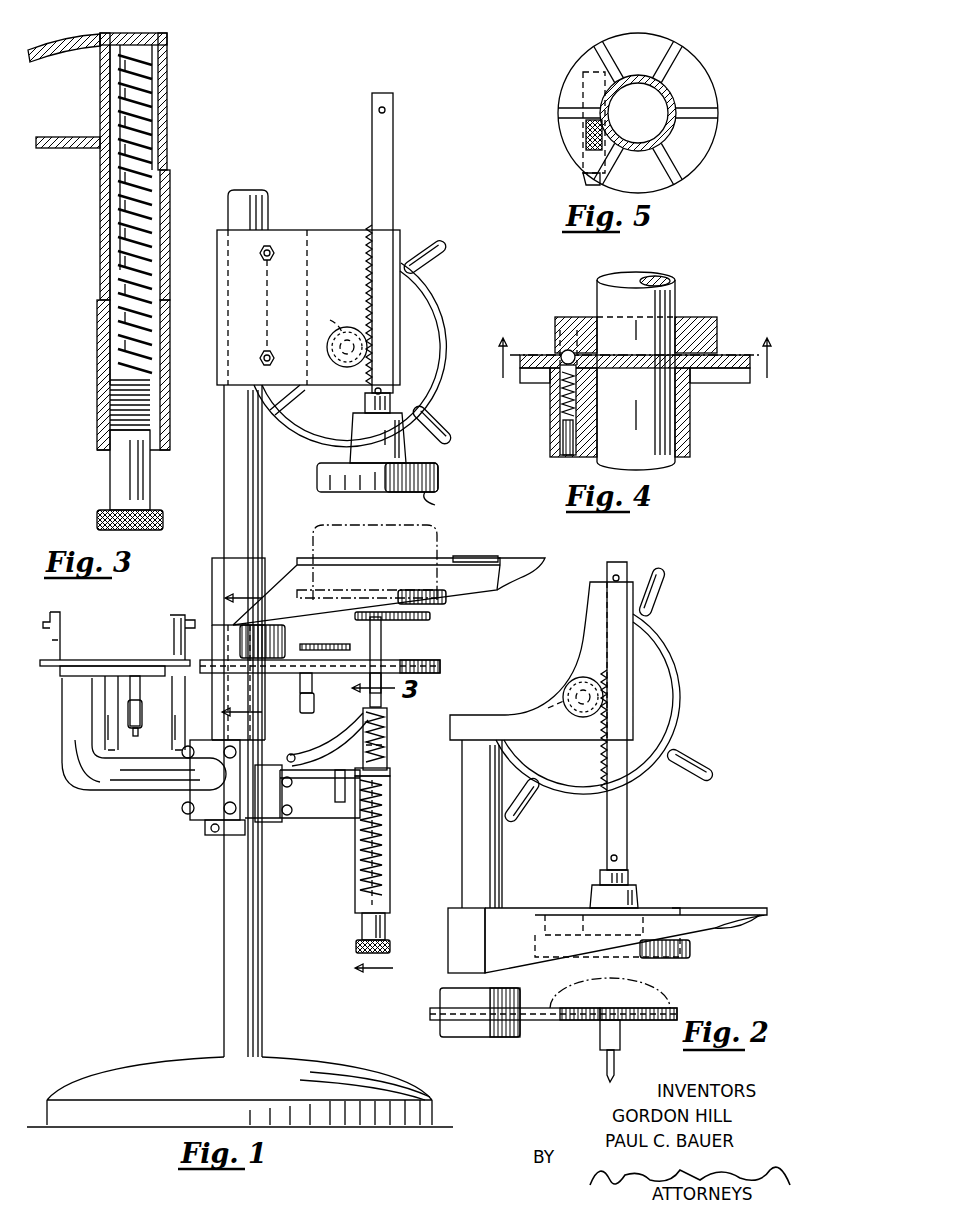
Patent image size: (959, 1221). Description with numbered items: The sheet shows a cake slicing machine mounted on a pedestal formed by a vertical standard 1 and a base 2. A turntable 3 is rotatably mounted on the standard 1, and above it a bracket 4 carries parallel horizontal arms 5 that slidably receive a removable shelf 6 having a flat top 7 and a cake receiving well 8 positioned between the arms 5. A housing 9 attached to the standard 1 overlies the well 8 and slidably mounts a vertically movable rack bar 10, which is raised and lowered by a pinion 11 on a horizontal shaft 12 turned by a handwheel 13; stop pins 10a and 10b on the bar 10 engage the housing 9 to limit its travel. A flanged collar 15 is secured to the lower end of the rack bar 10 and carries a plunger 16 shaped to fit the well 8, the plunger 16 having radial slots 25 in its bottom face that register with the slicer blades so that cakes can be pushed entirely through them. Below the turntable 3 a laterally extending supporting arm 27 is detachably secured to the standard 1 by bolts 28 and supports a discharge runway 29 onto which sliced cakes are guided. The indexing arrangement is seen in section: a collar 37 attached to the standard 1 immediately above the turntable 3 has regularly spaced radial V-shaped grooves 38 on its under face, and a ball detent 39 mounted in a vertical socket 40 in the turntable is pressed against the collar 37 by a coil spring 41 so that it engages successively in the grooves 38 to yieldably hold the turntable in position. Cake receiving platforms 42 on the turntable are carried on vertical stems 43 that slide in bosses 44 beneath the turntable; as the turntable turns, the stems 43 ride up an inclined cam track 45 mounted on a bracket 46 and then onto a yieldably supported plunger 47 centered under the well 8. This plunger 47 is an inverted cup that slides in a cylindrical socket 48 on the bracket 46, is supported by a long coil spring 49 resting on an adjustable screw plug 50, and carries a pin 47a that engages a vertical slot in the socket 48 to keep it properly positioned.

In FIG. 1, the vertical standard 1 is at (256, 198).
In FIG. 2, the vertical standard 1 is at (503, 858).
In FIG. 4, the vertical standard 1 is at (675, 292).
In FIG. 1, the base 2 is at (147, 1075).
In FIG. 1, the turntable 3 is at (442, 667).
In FIG. 2, the turntable 3 is at (553, 1007).
In FIG. 4, the turntable 3 is at (735, 355).
In FIG. 1, the bracket 4 is at (288, 575).
In FIG. 2, the bracket 4 is at (456, 946).
In FIG. 1, the parallel horizontal arms 5 is at (331, 577).
In FIG. 2, the parallel horizontal arms 5 is at (712, 928).
In FIG. 1, the shelf 6 is at (470, 557).
In FIG. 1, the flat top 7 is at (510, 560).
In FIG. 2, the flat top 7 is at (680, 910).
In FIG. 1, the cake receiving well 8 is at (420, 578).
In FIG. 2, the cake receiving well 8 is at (568, 912).
In FIG. 1, the housing 9 is at (318, 242).
In FIG. 2, the housing 9 is at (541, 661).
In FIG. 1, the rack bar 10 is at (386, 205).
In FIG. 2, the rack bar 10 is at (626, 570).
In FIG. 1, the stop pin 10a is at (386, 110).
In FIG. 2, the stop pin 10a is at (612, 578).
In FIG. 1, the stop pin 10b is at (374, 393).
In FIG. 2, the stop pin 10b is at (618, 858).
In FIG. 1, the pinion 11 is at (330, 320).
In FIG. 2, the pinion 11 is at (547, 708).
In FIG. 1, the horizontal shaft 12 is at (340, 366).
In FIG. 2, the horizontal shaft 12 is at (572, 680).
In FIG. 1, the handwheel 13 is at (432, 305).
In FIG. 2, the handwheel 13 is at (668, 658).
In FIG. 1, the flanged collar 15 is at (410, 422).
In FIG. 2, the flanged collar 15 is at (614, 889).
In FIG. 1, the plunger 16 is at (345, 456).
In FIG. 2, the plunger 16 is at (668, 960).
In FIG. 1, the radial slots 25 is at (415, 494).
In FIG. 1, the supporting arm 27 is at (93, 778).
In FIG. 1, the bolts 28 is at (226, 812).
In FIG. 1, the discharge runway 29 is at (100, 658).
In FIG. 1, the collar 37 is at (288, 648).
In FIG. 4, the collar 37 is at (715, 318).
In FIG. 5, the collar 37 is at (718, 78).
In FIG. 4, the V-shaped grooves 38 is at (578, 360).
In FIG. 5, the V-shaped grooves 38 is at (590, 108).
In FIG. 4, the ball detent 39 is at (558, 330).
In FIG. 4, the vertical socket 40 is at (558, 400).
In FIG. 4, the coil spring 41 is at (560, 432).
In FIG. 1, the platforms 42 is at (432, 617).
In FIG. 2, the platforms 42 is at (575, 1020).
In FIG. 1, the vertical stems 43 is at (383, 640).
In FIG. 2, the vertical stems 43 is at (618, 1068).
In FIG. 1, the bosses 44 is at (106, 692).
In FIG. 3, the inclined cam track 45 is at (58, 45).
In FIG. 1, the inclined cam track 45 is at (290, 812).
In FIG. 3, the bracket 46 is at (53, 150).
In FIG. 1, the bracket 46 is at (305, 818).
In FIG. 3, the yieldably supported plunger 47 is at (167, 95).
In FIG. 1, the yieldably supported plunger 47 is at (390, 742).
In FIG. 1, the pin 47a is at (391, 778).
In FIG. 3, the cylindrical socket 48 is at (98, 294).
In FIG. 1, the cylindrical socket 48 is at (356, 868).
In FIG. 3, the coil spring 49 is at (103, 238).
In FIG. 1, the coil spring 49 is at (385, 753).
In FIG. 3, the screw plug 50 is at (112, 474).
In FIG. 1, the screw plug 50 is at (388, 922).